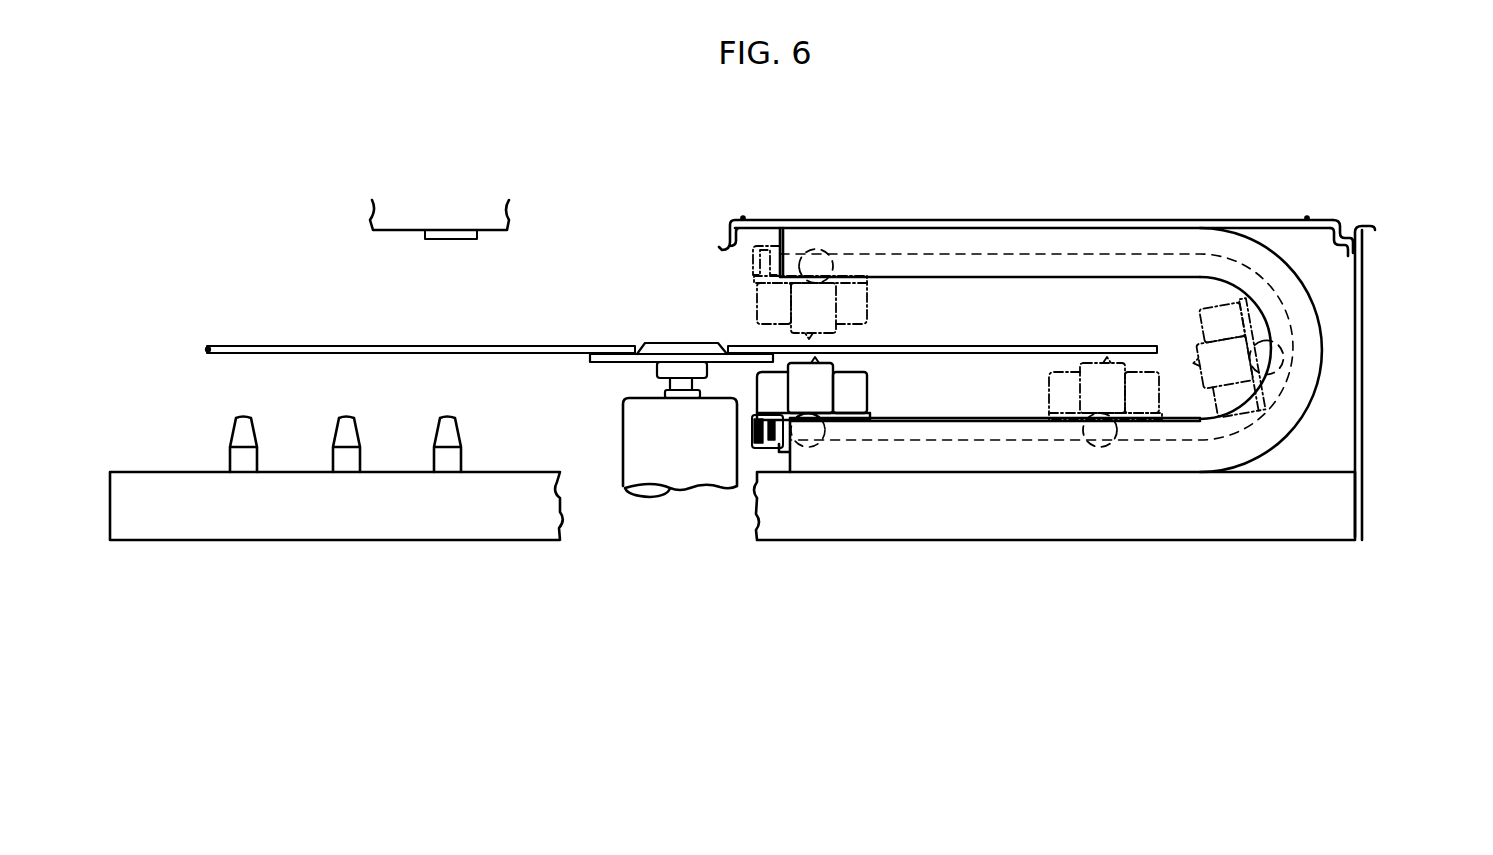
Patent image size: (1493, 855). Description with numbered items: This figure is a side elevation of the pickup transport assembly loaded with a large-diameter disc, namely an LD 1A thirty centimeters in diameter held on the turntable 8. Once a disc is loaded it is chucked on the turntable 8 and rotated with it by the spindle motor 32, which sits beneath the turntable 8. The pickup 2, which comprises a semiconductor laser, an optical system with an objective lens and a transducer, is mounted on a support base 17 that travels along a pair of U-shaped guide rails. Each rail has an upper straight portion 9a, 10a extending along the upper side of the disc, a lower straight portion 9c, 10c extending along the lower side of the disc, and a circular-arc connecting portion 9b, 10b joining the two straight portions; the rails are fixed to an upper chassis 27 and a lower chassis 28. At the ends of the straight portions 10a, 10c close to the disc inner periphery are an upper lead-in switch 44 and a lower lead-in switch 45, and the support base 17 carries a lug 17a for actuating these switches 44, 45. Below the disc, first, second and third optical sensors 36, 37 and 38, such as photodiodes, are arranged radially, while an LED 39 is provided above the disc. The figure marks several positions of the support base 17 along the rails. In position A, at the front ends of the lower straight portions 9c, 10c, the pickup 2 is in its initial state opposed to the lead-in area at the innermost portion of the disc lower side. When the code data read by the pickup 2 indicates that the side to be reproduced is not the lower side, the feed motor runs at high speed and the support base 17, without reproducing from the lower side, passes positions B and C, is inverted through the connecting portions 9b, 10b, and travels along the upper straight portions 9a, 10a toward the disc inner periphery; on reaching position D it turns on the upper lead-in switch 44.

The LD 1A is at (392, 345).
The pickup 2 is at (820, 388).
The turntable 8 is at (603, 362).
The upper straight portion 9a is at (956, 242).
The circular-arc connecting portion 9b is at (1312, 365).
The lower straight portion 9c is at (917, 457).
The upper straight portion 10a is at (1051, 326).
The circular-arc connecting portion 10b is at (1341, 348).
The lower straight portion 10c is at (989, 521).
The support base 17 is at (853, 398).
The lug 17a is at (848, 432).
The upper chassis 27 is at (1143, 220).
The lower chassis 28 is at (447, 527).
The spindle motor 32 is at (645, 435).
The first optical sensor 36 is at (455, 460).
The second optical sensor 37 is at (356, 460).
The third optical sensor 38 is at (258, 460).
The LED 39 is at (462, 239).
The upper lead-in switch 44 is at (757, 258).
The lower lead-in switch 45 is at (757, 442).
The position A is at (846, 473).
The position B is at (1137, 430).
The position C is at (1272, 322).
The position D is at (852, 277).